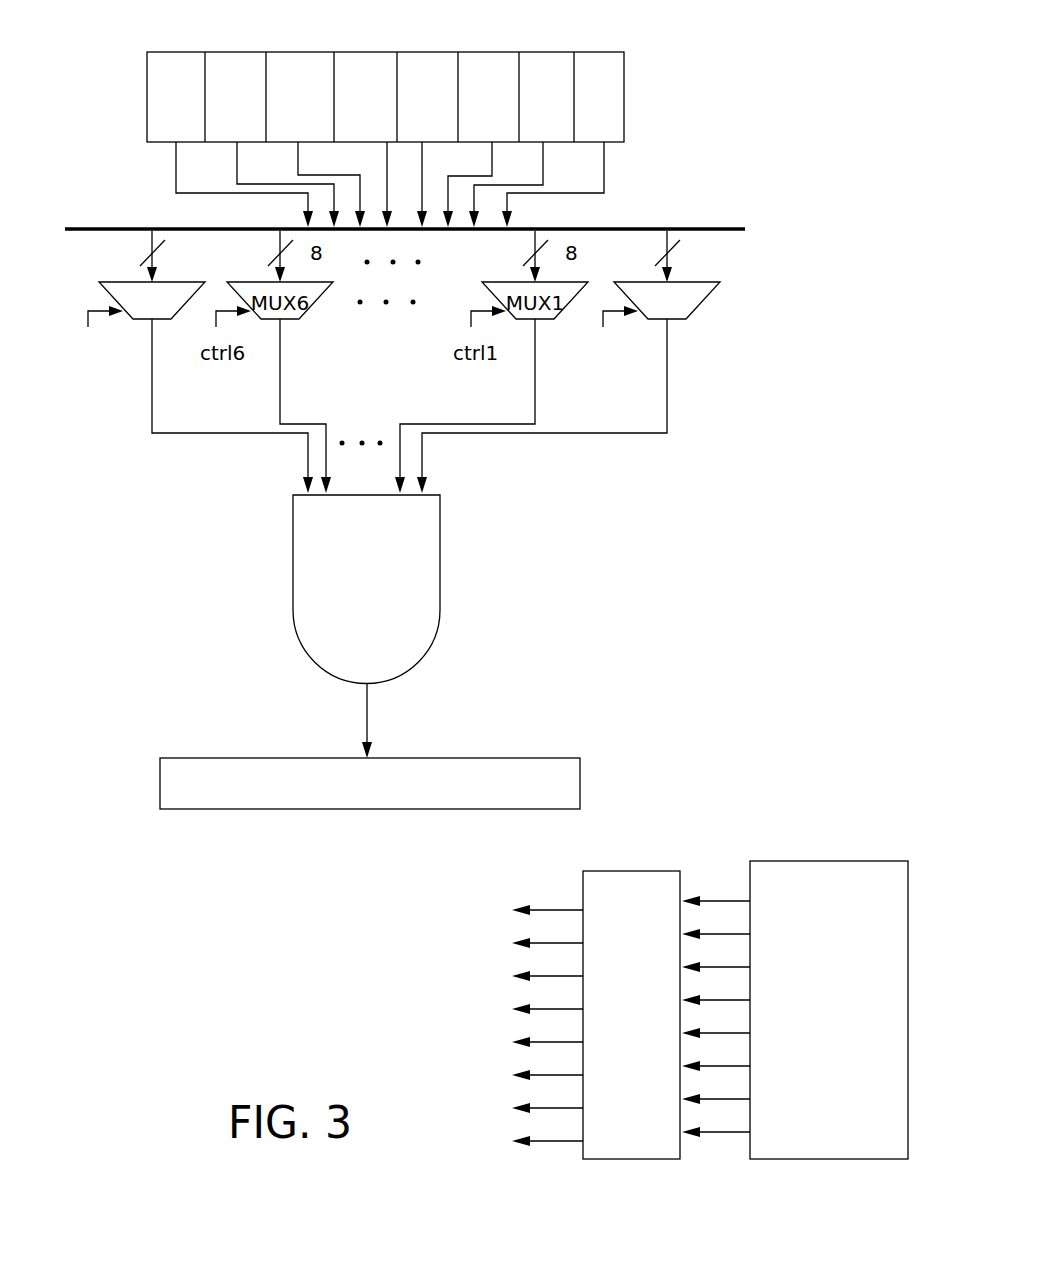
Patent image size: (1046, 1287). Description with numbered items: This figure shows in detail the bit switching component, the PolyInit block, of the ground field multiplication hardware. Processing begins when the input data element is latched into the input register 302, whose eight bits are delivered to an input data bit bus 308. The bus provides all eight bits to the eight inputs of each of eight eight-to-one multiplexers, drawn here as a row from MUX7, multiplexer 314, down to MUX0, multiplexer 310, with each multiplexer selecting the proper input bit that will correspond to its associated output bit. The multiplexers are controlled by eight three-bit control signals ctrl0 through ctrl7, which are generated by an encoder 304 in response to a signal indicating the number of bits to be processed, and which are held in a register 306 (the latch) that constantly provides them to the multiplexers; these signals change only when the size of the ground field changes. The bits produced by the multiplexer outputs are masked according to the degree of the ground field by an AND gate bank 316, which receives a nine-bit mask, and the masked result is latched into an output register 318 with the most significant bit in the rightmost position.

The input register 302 is at (624, 88).
The encoder 304 is at (777, 861).
The register 306 is at (625, 871).
The input data bit bus 308 is at (648, 228).
The multiplexer 310 is at (700, 300).
The multiplexer 314 is at (107, 293).
The AND gate bank 316 is at (430, 642).
The output register 318 is at (580, 775).